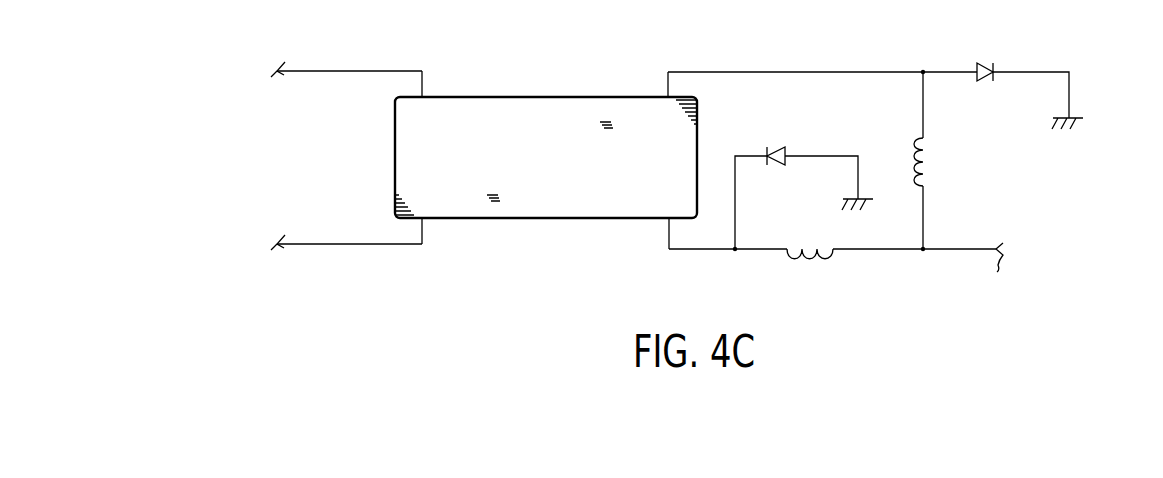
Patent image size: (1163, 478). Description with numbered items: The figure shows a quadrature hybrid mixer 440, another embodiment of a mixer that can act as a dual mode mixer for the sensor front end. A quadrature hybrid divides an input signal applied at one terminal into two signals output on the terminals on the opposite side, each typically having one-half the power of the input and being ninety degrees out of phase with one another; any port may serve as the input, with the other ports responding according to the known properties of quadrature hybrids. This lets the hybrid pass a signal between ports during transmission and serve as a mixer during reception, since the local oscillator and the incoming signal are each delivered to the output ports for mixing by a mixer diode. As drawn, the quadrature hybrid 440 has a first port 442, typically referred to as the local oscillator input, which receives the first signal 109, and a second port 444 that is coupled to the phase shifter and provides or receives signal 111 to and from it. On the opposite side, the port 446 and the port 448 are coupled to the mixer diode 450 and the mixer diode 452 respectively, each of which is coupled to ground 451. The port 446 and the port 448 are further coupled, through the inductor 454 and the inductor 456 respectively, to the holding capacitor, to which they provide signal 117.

The first signal 109 is at (346, 227).
The signal 111 is at (346, 49).
The signal 117 is at (991, 272).
The quadrature hybrid mixer 440 is at (596, 180).
The first port 442 is at (424, 226).
The second port 444 is at (423, 92).
The port 446 is at (668, 90).
The port 448 is at (668, 230).
The mixer diode 450 is at (978, 62).
The ground 451 is at (843, 200).
The mixer diode 452 is at (776, 148).
The inductor 454 is at (921, 166).
The inductor 456 is at (829, 257).